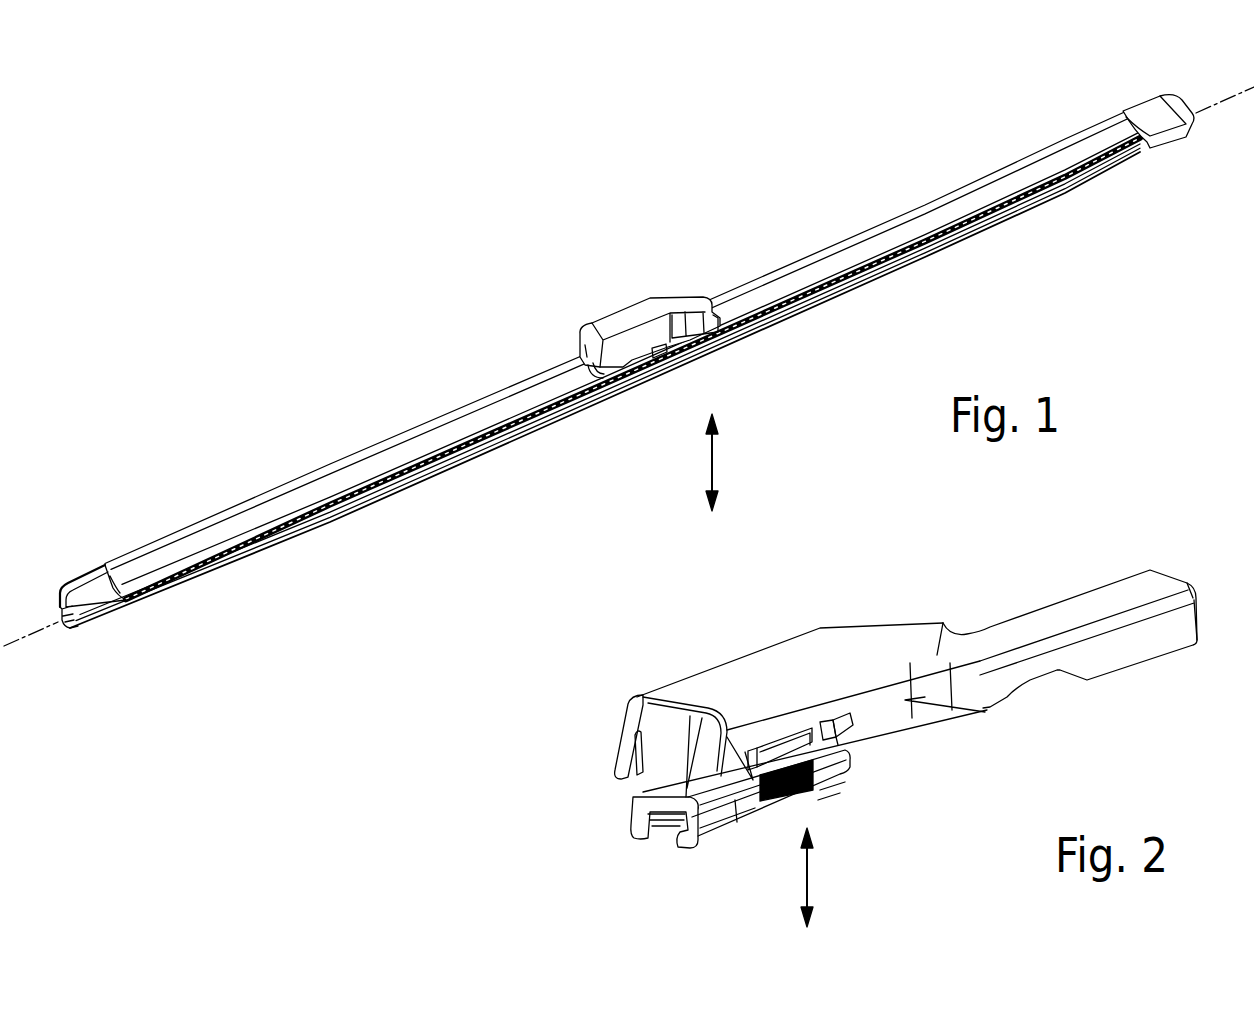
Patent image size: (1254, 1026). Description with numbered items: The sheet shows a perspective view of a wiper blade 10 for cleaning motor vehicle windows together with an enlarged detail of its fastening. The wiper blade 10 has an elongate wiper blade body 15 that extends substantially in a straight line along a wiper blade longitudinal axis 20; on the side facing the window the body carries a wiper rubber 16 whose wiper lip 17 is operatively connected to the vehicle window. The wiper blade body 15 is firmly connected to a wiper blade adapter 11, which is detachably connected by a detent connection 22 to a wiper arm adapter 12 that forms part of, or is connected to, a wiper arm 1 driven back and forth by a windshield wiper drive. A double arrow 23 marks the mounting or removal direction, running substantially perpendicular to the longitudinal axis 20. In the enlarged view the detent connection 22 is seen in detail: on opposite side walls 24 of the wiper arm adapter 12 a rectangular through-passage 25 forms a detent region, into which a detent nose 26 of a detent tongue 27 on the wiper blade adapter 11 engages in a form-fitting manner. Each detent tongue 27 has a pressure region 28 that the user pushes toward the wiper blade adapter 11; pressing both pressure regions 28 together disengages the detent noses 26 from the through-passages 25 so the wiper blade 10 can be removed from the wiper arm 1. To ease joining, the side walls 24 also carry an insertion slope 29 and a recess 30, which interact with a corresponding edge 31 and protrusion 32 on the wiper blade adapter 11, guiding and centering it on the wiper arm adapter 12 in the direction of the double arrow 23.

In FIG. 1, the wiper arm 1 is at (605, 366).
In FIG. 2, the wiper arm 1 is at (1037, 608).
In FIG. 1, the wiper blade 10 is at (627, 361).
In FIG. 1, the wiper blade adapter 11 is at (604, 380).
In FIG. 2, the wiper blade adapter 11 is at (712, 840).
In FIG. 1, the wiper arm adapter 12 is at (663, 356).
In FIG. 2, the wiper arm adapter 12 is at (782, 738).
In FIG. 1, the wiper blade body 15 is at (191, 524).
In FIG. 1, the wiper rubber 16 is at (278, 533).
In FIG. 1, the wiper lip 17 is at (434, 471).
In FIG. 1, the wiper blade longitudinal axis 20 is at (1240, 95).
In FIG. 1, the detent connection 22 is at (672, 360).
In FIG. 2, the detent connection 22 is at (846, 777).
In FIG. 1, the double arrow 23 is at (720, 446).
In FIG. 2, the double arrow 23 is at (812, 874).
In FIG. 2, the side walls 24 is at (850, 692).
In FIG. 2, the through-passage 25 is at (805, 736).
In FIG. 2, the detent nose 26 is at (792, 748).
In FIG. 2, the detent tongue 27 is at (818, 784).
In FIG. 2, the pressure region 28 is at (787, 803).
In FIG. 2, the insertion slope 29 is at (725, 734).
In FIG. 2, the recess 30 is at (880, 720).
In FIG. 2, the edge 31 is at (660, 823).
In FIG. 2, the protrusion 32 is at (840, 738).